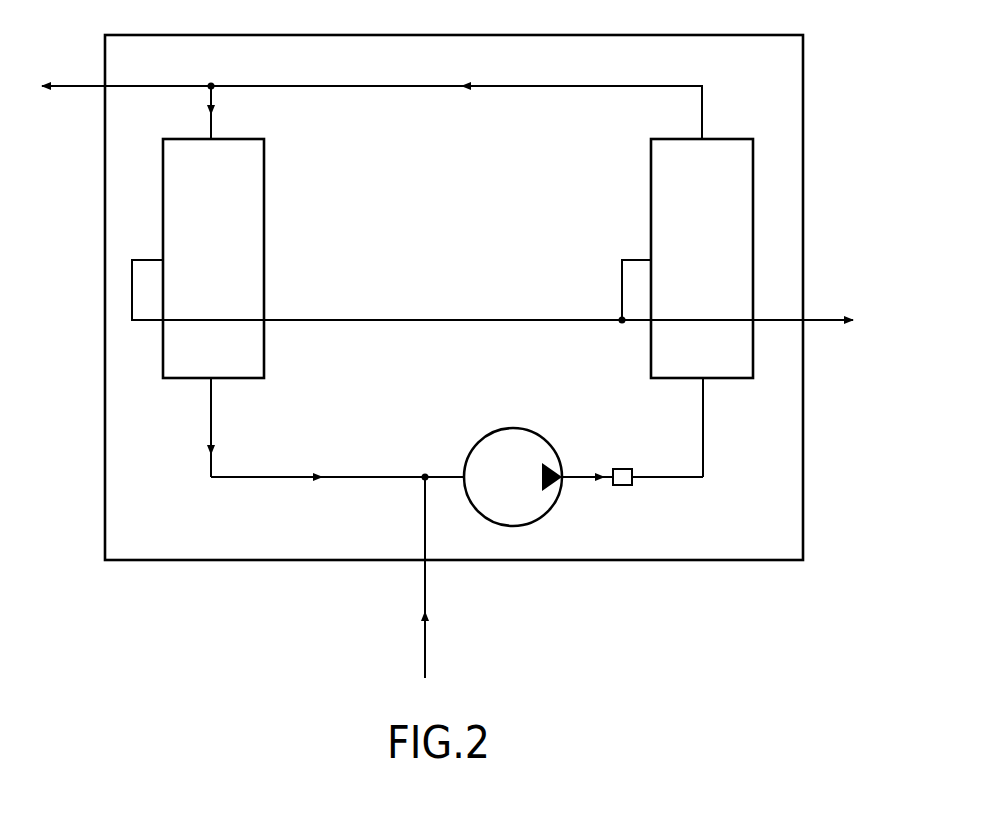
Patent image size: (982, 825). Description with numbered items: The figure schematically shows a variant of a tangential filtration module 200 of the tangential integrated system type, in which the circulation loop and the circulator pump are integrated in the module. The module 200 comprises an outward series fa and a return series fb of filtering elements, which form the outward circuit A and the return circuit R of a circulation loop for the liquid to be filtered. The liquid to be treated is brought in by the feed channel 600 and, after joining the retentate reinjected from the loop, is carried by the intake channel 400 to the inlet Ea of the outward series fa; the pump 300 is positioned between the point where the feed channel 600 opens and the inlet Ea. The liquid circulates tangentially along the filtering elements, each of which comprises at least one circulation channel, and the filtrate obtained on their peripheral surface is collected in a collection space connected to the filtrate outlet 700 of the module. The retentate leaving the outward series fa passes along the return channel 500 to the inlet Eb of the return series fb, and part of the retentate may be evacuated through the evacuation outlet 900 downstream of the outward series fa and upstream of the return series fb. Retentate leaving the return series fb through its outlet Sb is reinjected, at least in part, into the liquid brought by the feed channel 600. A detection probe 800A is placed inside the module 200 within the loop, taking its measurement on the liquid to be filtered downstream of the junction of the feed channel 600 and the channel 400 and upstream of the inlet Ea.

The module 200 is at (783, 542).
The evacuation outlet 900 is at (85, 84).
The return channel 500 is at (535, 86).
The inlet of the return series of filtering elements Eb is at (212, 137).
The return circuit R is at (147, 237).
The return series of filtering elements fb is at (220, 282).
The outward circuit A is at (783, 233).
The outward series of filtering elements fa is at (709, 282).
The filtrate outlet 700 is at (803, 325).
The outlet of the return series of filtering elements Sb is at (209, 380).
The inlet of the outward series of filtering elements Ea is at (705, 380).
The intake channel 400 is at (667, 480).
The pump 300 is at (513, 429).
The detection probe 800A is at (623, 468).
The feed channel 600 is at (427, 652).